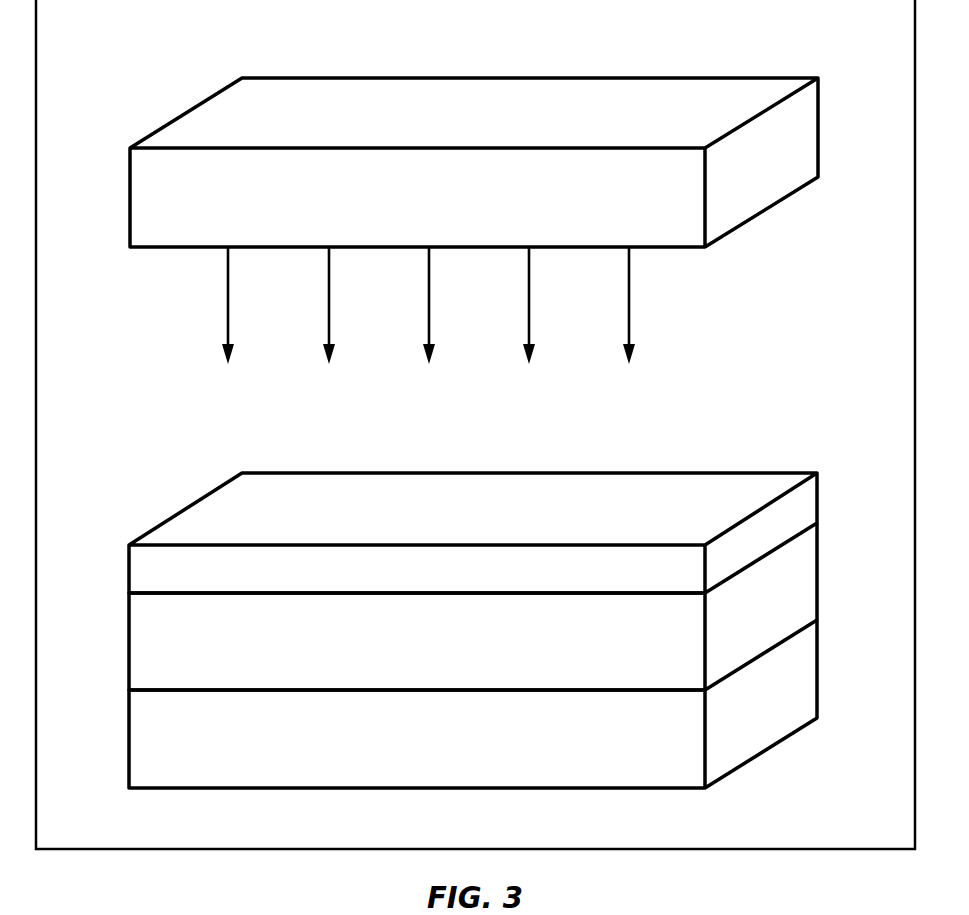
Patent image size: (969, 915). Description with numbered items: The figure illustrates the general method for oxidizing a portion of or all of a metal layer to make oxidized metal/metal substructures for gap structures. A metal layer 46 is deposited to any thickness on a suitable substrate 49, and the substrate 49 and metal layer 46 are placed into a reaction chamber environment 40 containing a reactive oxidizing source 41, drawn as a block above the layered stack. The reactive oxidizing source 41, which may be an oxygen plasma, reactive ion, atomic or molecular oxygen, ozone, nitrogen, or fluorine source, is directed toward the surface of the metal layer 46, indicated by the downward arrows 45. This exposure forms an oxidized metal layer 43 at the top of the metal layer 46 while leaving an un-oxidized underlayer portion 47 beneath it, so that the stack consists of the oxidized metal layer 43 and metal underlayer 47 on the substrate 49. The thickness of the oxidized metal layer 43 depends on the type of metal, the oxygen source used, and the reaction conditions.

The reaction chamber environment 40 is at (439, 131).
The reactive oxidizing source 41 is at (130, 192).
The deposition flux arrows 45 is at (640, 299).
The oxidized metal layer 43 is at (803, 507).
The un-oxidized underlayer portion 47 is at (798, 562).
The metal layer 46 is at (481, 581).
The substrate 49 is at (481, 630).